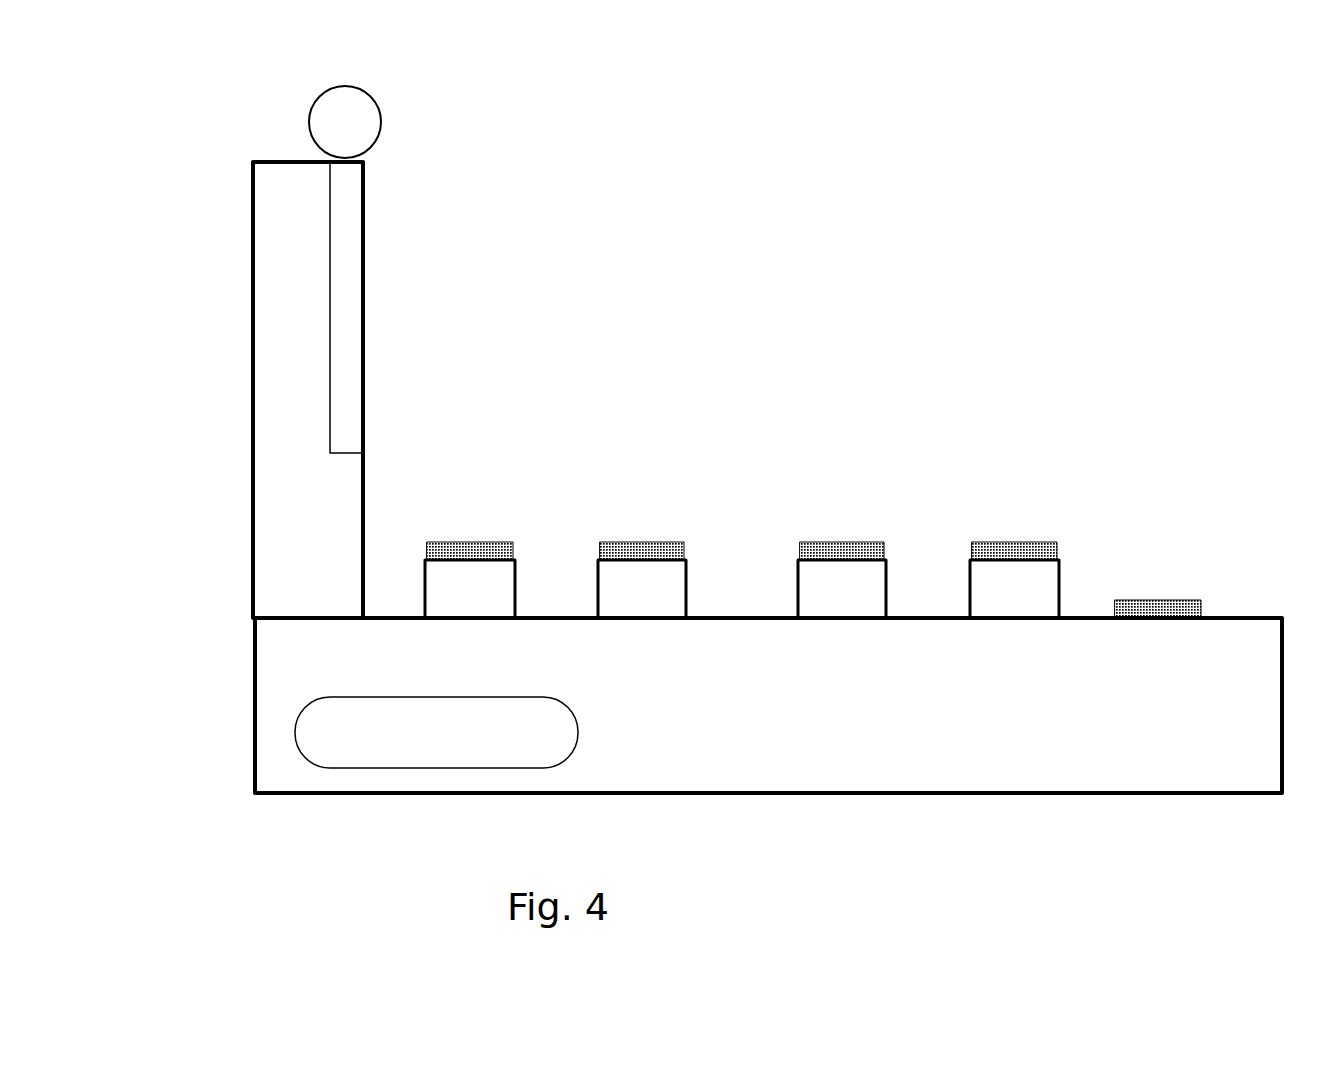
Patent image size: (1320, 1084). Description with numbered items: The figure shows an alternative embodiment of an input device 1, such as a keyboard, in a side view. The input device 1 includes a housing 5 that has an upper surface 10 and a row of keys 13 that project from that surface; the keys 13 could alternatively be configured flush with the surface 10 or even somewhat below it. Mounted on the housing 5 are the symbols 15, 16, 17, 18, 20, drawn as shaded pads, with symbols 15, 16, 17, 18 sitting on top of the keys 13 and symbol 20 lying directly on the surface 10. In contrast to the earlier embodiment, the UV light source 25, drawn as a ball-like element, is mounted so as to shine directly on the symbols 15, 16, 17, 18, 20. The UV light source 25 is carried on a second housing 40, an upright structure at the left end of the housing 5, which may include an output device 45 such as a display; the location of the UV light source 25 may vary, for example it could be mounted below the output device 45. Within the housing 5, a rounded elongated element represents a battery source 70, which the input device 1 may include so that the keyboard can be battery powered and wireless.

The input device 1 is at (686, 510).
The housing 5 is at (867, 793).
The surface 10 is at (710, 617).
The keys 13 is at (597, 592).
The symbol 15 is at (470, 542).
The symbol 16 is at (643, 543).
The symbol 17 is at (842, 542).
The symbol 18 is at (1015, 542).
The symbol 20 is at (1157, 600).
The UV light source 25 is at (364, 94).
The second housing 40 is at (253, 507).
The output device 45 is at (328, 260).
The battery source 70 is at (375, 768).